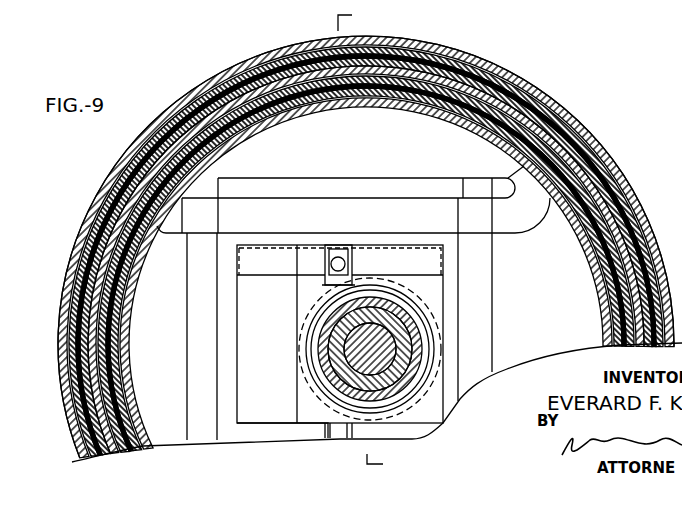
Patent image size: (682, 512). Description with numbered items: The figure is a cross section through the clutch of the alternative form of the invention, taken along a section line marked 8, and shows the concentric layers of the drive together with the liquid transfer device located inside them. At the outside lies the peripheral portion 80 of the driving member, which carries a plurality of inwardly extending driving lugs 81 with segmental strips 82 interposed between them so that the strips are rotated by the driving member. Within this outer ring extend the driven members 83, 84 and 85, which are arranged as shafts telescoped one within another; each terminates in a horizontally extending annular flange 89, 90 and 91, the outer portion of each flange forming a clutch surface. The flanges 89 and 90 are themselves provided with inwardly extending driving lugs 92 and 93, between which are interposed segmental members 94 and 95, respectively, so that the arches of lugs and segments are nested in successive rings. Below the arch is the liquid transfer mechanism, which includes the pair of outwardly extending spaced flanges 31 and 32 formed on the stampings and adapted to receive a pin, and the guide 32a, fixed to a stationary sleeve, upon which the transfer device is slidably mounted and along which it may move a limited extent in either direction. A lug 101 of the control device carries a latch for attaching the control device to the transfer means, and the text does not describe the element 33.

The section line 8- 8 is at (367, 242).
The spaced flange 31 is at (325, 258).
The spaced flange 32 is at (352, 252).
The guide 32a is at (300, 373).
The top support bar 33 is at (323, 198).
The peripheral portion of the driving member 80 is at (213, 76).
The driving lug 81 is at (396, 47).
The segmental strip 82 is at (296, 50).
The driven member 83 is at (353, 340).
The driven member 84 is at (403, 343).
The driven member 85 is at (322, 370).
The annular flange 89 is at (428, 60).
The annular flange 90 is at (350, 100).
The annular flange 91 is at (415, 105).
The driving lug 92 is at (366, 62).
The driving lug 93 is at (368, 90).
The segmental member 94 is at (492, 98).
The segmental member 95 is at (503, 124).
The lug 101 is at (340, 279).